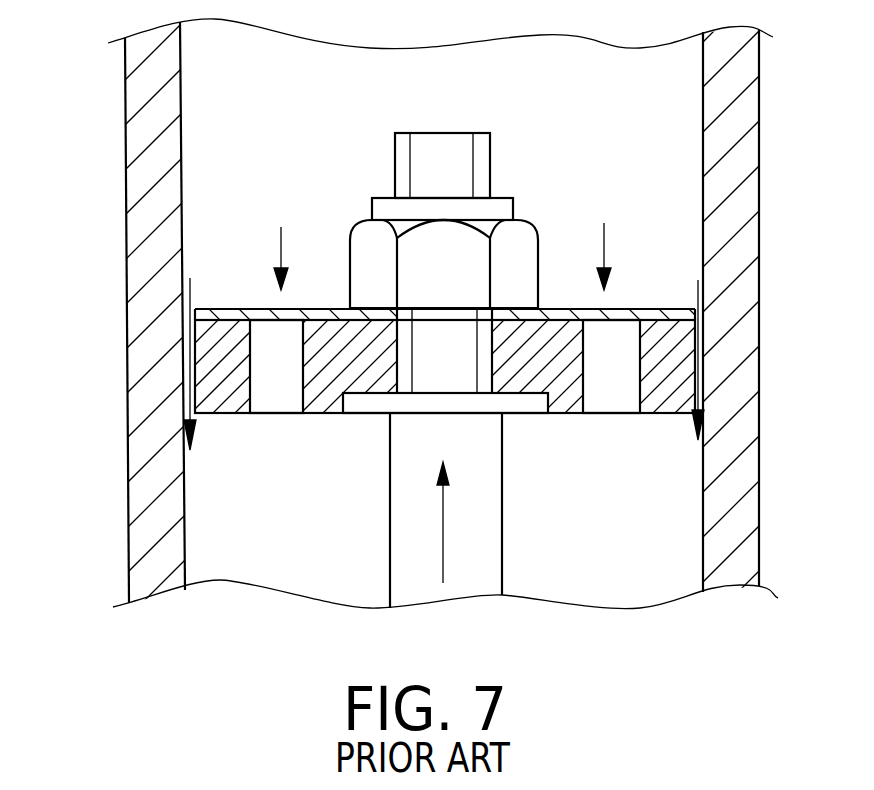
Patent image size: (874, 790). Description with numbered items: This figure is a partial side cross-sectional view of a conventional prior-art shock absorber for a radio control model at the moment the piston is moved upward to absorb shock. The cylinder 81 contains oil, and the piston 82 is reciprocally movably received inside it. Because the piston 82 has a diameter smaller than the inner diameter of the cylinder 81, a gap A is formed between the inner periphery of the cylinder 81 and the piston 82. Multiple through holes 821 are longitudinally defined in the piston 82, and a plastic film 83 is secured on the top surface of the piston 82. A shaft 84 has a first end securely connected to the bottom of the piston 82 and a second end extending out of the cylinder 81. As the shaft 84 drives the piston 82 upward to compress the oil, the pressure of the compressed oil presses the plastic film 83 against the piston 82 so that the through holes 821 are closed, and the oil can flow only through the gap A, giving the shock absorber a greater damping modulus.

The cylinder 81 is at (710, 105).
The piston 82 is at (558, 370).
The through holes 821 is at (277, 368).
The plastic film 83 is at (565, 310).
The shaft 84 is at (487, 538).
The gap A is at (188, 363).